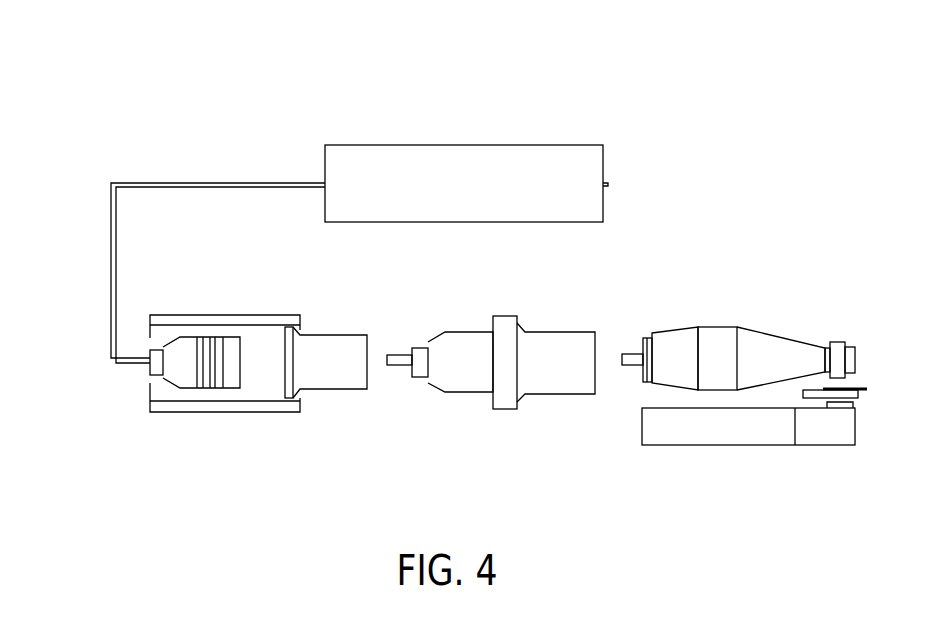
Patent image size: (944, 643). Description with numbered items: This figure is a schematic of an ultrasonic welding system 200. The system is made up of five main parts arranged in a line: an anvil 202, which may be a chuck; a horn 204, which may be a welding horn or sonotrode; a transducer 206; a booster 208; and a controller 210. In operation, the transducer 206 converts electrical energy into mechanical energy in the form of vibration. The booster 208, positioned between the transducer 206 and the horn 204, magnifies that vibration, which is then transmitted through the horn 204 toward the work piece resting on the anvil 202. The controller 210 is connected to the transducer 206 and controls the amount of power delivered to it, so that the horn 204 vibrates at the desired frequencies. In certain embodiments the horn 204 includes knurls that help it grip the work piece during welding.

The ultrasonic welding system 200 is at (98, 105).
The anvil 202 is at (727, 428).
The horn 204 is at (783, 358).
The transducer 206 is at (272, 322).
The booster 208 is at (575, 342).
The controller 210 is at (452, 196).